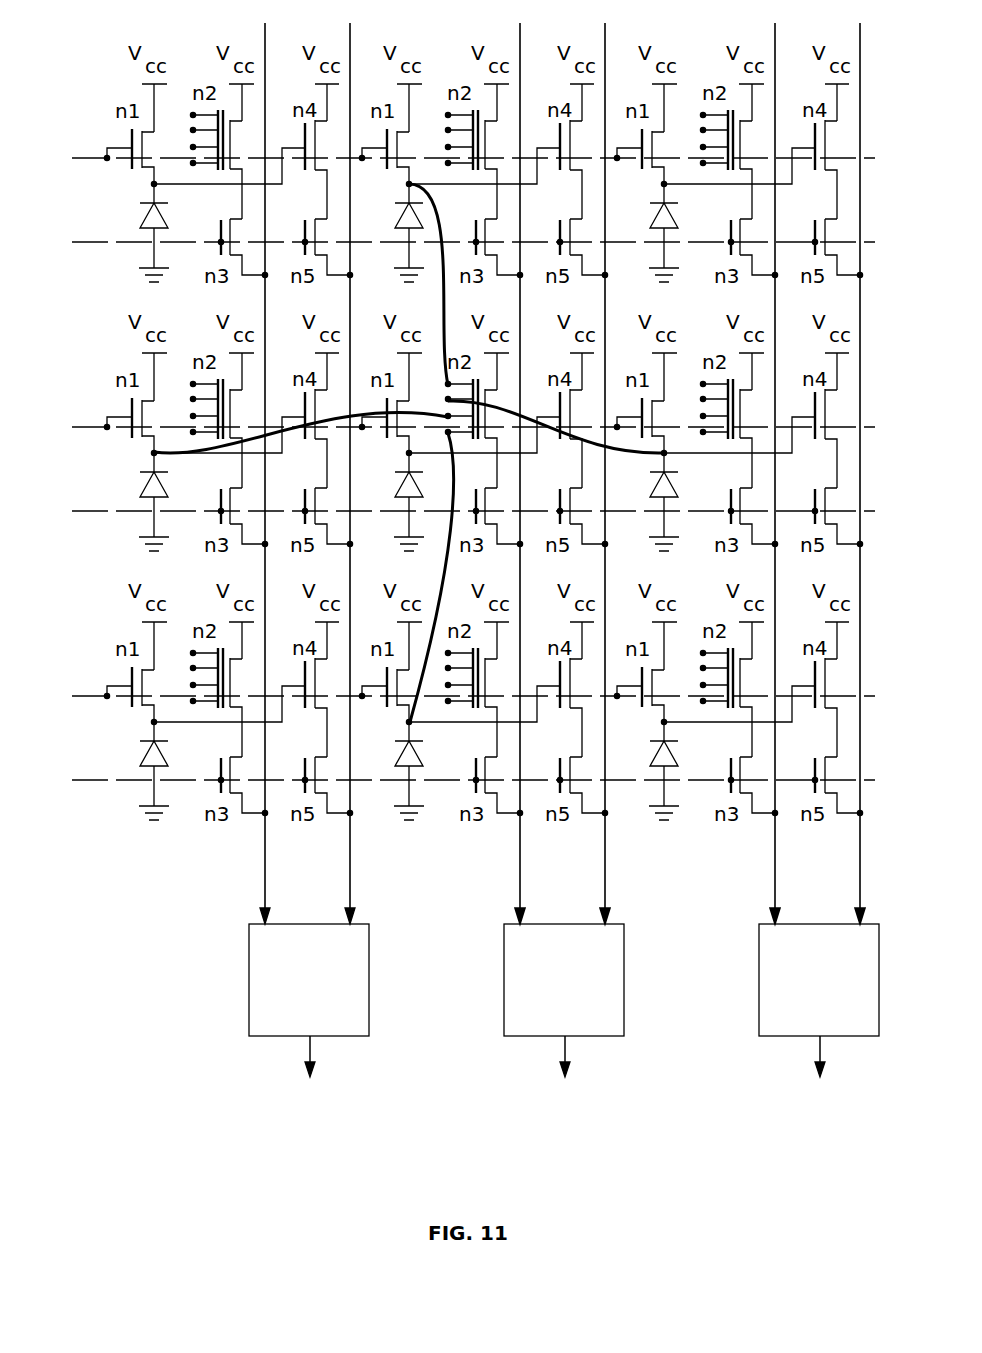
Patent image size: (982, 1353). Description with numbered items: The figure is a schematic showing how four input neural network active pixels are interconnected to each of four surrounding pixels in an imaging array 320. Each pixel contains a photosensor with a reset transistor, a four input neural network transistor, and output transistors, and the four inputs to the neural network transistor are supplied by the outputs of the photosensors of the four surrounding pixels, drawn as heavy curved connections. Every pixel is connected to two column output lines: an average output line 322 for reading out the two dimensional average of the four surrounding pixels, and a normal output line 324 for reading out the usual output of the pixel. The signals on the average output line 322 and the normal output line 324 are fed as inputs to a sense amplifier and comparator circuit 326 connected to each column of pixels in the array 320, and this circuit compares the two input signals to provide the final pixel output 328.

The imaging array 320 is at (527, 1177).
The average output line 322 is at (265, 885).
The normal output line 324 is at (351, 888).
The sense amplifier and comparator circuit 326 is at (309, 980).
The pixel output 328 is at (308, 1045).